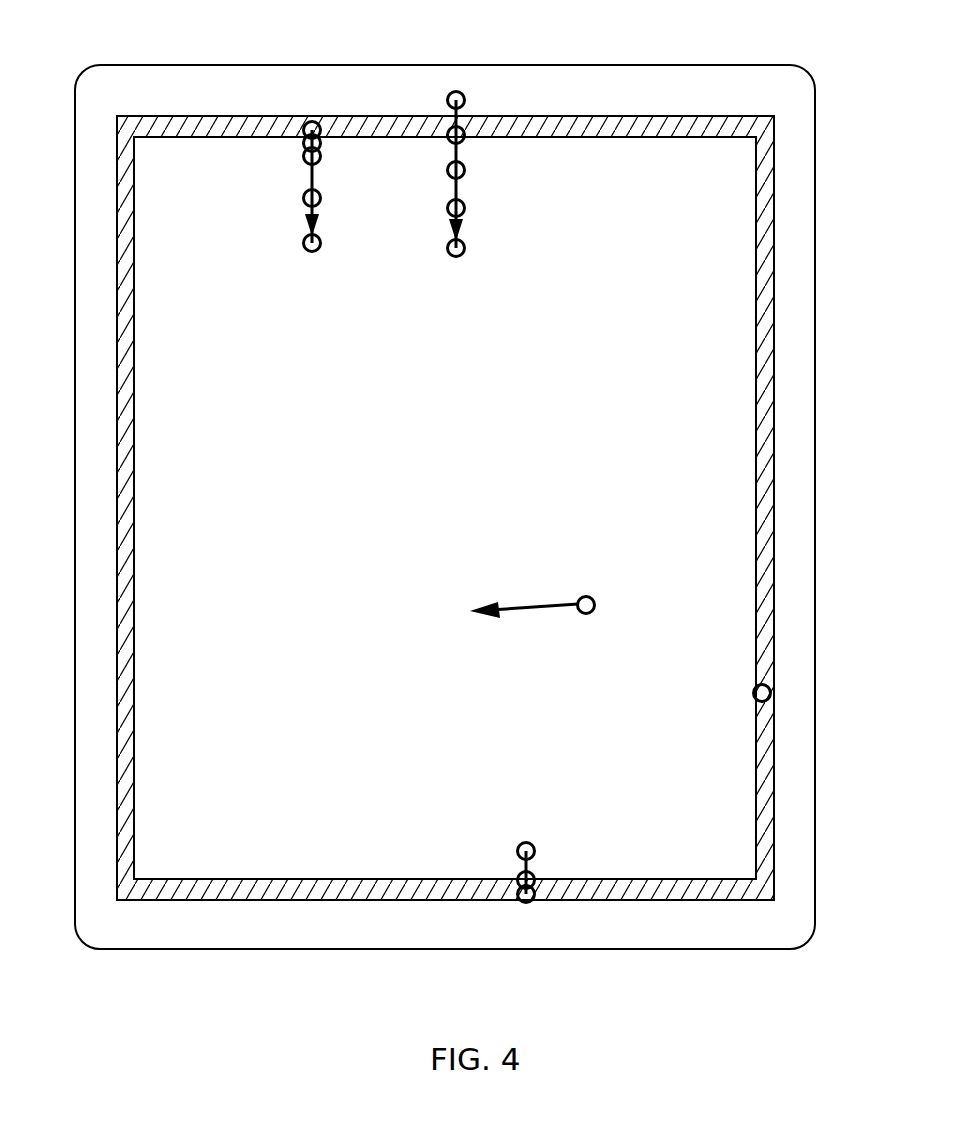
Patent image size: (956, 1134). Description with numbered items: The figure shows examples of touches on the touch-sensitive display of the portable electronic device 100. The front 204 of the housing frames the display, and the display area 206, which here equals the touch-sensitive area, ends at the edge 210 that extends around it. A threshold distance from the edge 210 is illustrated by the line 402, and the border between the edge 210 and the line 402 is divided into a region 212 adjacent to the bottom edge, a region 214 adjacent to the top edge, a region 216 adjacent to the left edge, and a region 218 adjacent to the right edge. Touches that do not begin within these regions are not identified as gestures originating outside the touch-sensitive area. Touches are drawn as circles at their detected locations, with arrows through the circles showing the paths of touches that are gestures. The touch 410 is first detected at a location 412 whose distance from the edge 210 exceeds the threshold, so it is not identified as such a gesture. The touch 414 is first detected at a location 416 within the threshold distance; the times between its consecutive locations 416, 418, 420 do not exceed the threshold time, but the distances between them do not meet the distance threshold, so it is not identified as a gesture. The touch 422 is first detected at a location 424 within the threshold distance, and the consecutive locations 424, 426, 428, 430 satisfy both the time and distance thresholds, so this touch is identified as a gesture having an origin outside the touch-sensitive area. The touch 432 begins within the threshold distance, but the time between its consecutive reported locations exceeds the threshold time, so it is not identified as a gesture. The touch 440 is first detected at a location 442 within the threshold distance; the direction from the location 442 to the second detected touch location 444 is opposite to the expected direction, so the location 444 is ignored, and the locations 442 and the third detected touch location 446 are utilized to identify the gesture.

The portable electronic device 100 is at (839, 987).
The front of the housing 204 is at (596, 74).
The display area 206 is at (687, 286).
The edge 210 is at (777, 786).
The region 212 is at (302, 885).
The region 214 is at (390, 116).
The region 216 is at (128, 713).
The region 218 is at (766, 313).
The line 402 is at (757, 478).
The touch 410 is at (527, 604).
The location 412 is at (588, 596).
The touch 414 is at (312, 178).
The location 416 is at (315, 124).
The touch location 418 is at (318, 140).
The touch location 420 is at (306, 152).
The touch 422 is at (487, 117).
The location 424 is at (463, 118).
The touch location 426 is at (466, 172).
The touch location 428 is at (466, 210).
The touch location 430 is at (466, 249).
The touch 432 is at (770, 688).
The touch 440 is at (520, 869).
The location 442 is at (535, 875).
The second detected touch location 444 is at (530, 900).
The third detected touch location 446 is at (530, 845).